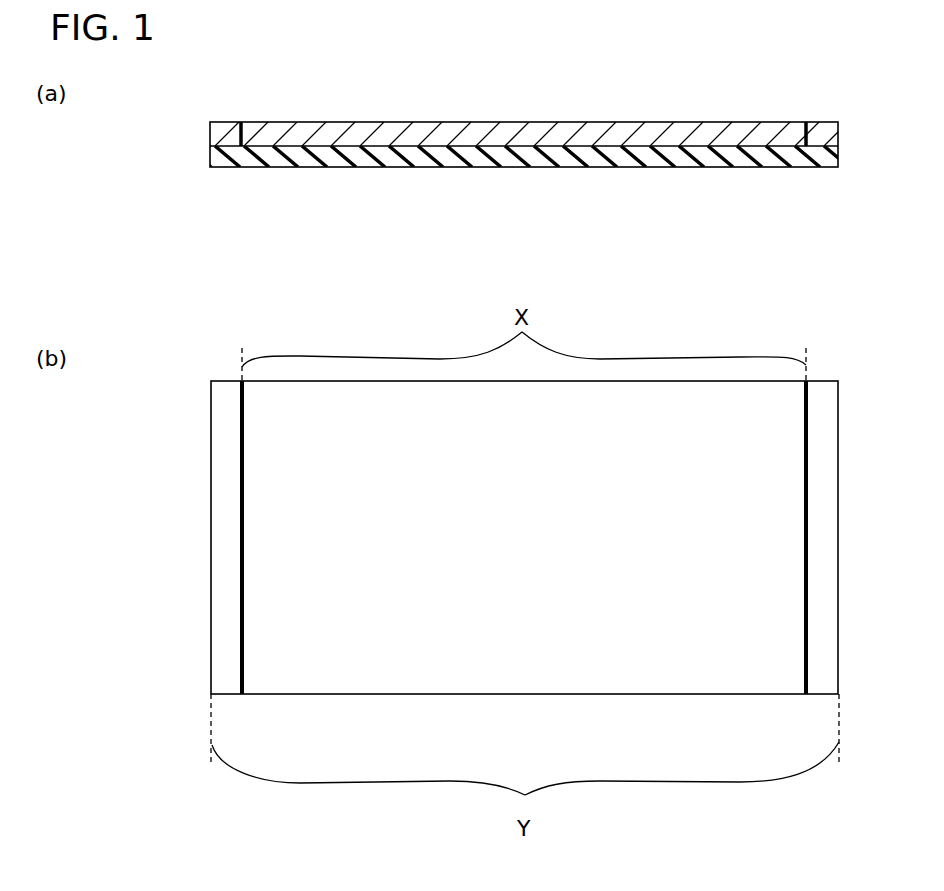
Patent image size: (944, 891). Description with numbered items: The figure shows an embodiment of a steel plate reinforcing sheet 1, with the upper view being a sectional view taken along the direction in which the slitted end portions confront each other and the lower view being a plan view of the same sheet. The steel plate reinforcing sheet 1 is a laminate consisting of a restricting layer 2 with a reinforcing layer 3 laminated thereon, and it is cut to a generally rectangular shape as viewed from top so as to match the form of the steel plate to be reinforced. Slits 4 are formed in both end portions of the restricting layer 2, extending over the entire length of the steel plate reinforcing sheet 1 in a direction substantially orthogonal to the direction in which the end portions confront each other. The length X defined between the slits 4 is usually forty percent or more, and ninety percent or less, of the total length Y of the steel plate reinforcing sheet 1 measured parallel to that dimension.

The steel plate reinforcing sheet 1 is at (524, 439).
The restricting layer 2 is at (838, 130).
The reinforcing layer 3 is at (838, 150).
The slits 4 is at (243, 122).